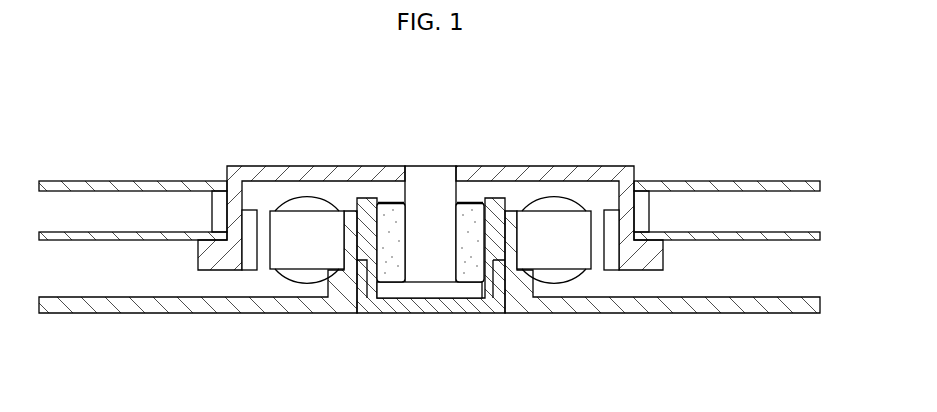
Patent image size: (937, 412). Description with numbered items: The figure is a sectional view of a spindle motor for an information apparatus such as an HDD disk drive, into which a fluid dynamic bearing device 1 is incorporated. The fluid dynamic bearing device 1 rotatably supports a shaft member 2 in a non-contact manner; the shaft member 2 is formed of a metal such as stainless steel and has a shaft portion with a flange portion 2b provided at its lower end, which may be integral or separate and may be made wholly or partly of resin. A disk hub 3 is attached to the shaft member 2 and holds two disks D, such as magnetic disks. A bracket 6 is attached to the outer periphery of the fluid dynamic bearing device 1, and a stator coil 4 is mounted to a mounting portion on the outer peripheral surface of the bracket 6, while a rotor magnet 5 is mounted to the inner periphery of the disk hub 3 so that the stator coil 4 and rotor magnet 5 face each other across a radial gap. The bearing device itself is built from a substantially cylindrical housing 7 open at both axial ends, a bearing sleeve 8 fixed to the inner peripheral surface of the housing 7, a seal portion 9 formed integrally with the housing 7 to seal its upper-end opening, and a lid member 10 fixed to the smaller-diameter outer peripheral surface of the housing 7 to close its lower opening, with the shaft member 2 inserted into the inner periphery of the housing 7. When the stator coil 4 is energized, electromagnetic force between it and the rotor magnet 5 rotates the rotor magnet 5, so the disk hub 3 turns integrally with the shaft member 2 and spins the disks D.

The fluid dynamic bearing device 1 is at (497, 197).
The shaft member 2 is at (433, 166).
The flange portion 2b is at (408, 290).
The disk hub 3 is at (583, 172).
The stator coil 4 is at (585, 262).
The rotor magnet 5 is at (611, 266).
The bracket 6 is at (522, 303).
The housing 7 is at (363, 197).
The bearing sleeve 8 is at (470, 204).
The seal portion 9 is at (390, 203).
The lid member 10 is at (461, 305).
The disk D is at (735, 181).